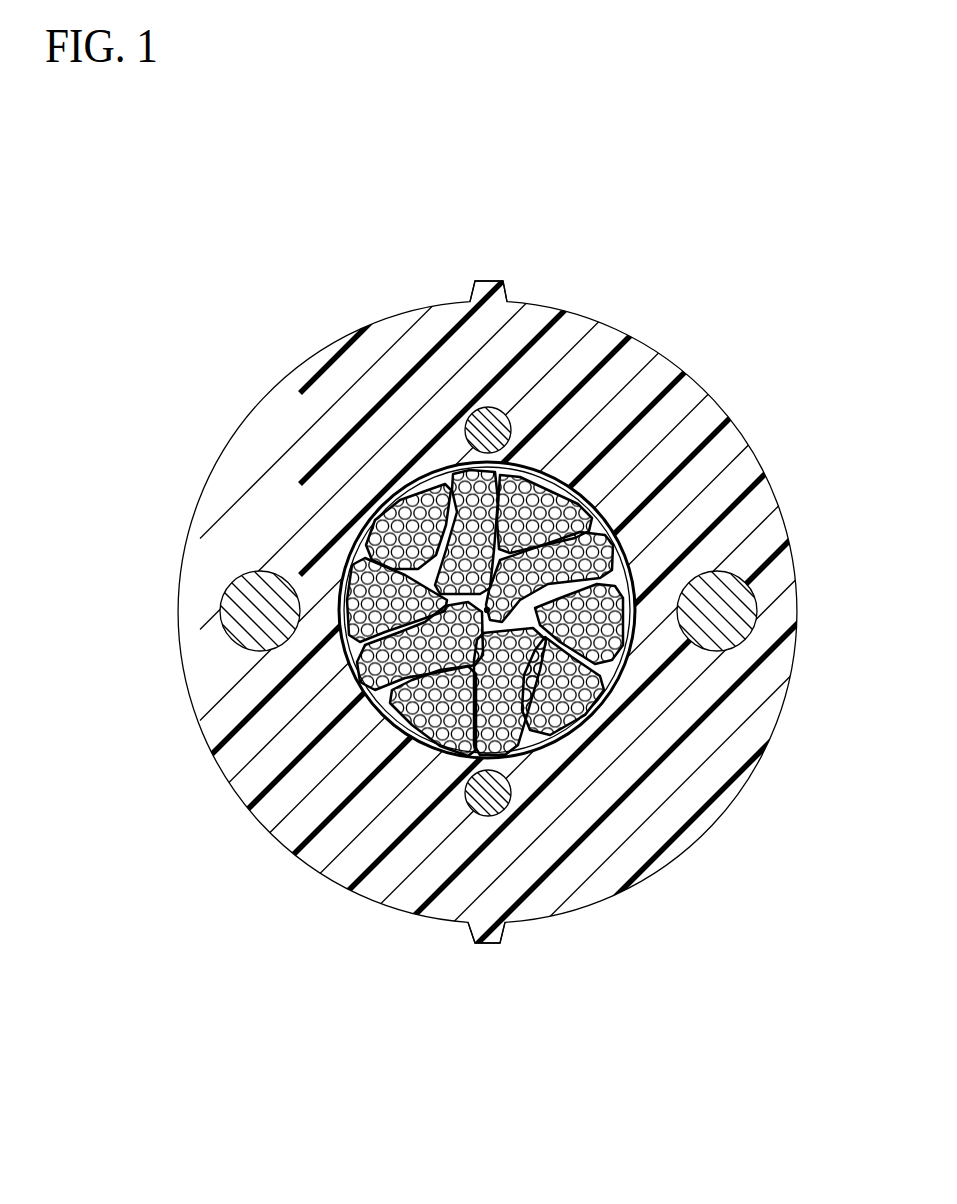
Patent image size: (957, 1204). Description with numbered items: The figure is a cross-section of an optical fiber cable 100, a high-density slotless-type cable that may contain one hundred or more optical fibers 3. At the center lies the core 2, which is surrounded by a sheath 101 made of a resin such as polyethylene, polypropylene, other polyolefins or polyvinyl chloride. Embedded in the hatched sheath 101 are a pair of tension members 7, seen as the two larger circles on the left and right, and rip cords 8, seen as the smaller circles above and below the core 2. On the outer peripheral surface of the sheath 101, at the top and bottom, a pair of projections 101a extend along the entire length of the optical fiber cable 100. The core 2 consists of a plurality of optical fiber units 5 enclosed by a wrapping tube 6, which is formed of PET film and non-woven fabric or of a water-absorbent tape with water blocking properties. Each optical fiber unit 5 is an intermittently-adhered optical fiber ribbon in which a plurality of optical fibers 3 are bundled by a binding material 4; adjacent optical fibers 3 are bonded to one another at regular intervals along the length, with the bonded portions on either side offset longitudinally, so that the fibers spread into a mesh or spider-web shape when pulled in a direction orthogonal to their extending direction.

The optical fiber cable 100 is at (203, 240).
The sheath 101 is at (381, 357).
The projection 101a is at (488, 279).
The core 2 is at (625, 525).
The optical fiber 3 is at (445, 750).
The binding material 4 is at (462, 750).
The optical fiber unit 5 is at (430, 993).
The wrapping tube 6 is at (543, 748).
The tension member 7 is at (722, 611).
The rip cord 8 is at (492, 422).